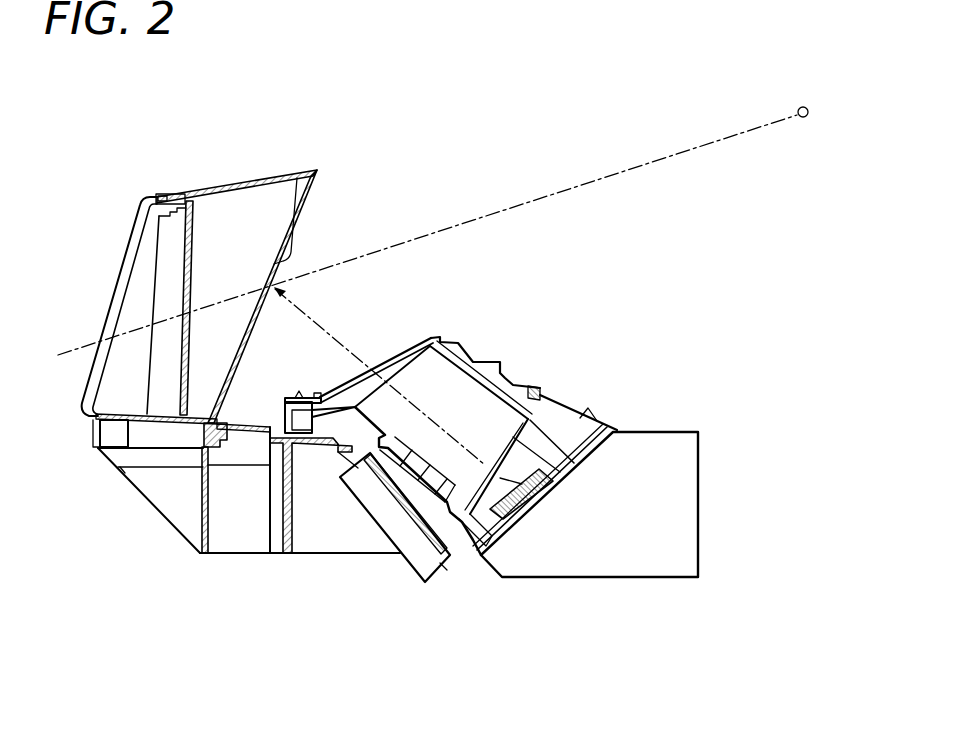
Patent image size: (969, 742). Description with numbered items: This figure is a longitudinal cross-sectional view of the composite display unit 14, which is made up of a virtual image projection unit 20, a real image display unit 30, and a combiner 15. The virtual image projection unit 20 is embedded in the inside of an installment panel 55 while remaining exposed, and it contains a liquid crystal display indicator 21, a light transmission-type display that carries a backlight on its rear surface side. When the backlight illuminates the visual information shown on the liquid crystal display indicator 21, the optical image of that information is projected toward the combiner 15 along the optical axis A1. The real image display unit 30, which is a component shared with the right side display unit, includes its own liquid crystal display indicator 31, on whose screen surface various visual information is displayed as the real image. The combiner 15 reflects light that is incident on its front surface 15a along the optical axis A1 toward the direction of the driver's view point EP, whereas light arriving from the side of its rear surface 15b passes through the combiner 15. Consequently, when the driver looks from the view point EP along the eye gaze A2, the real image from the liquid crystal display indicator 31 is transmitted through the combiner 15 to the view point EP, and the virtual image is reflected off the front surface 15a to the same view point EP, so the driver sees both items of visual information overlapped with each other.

The composite display unit 14 is at (112, 574).
The combiner 15 is at (287, 212).
The front surface 15a is at (300, 200).
The rear surface 15b is at (266, 241).
The virtual image projection unit 20 is at (628, 421).
The liquid crystal display indicator 21 is at (535, 510).
The real image display unit 30 is at (165, 247).
The liquid crystal display indicator 31 is at (197, 242).
The installment panel 55 is at (680, 428).
The optical axis A1 is at (347, 320).
The eye gaze A2 is at (597, 181).
The view point EP is at (803, 118).